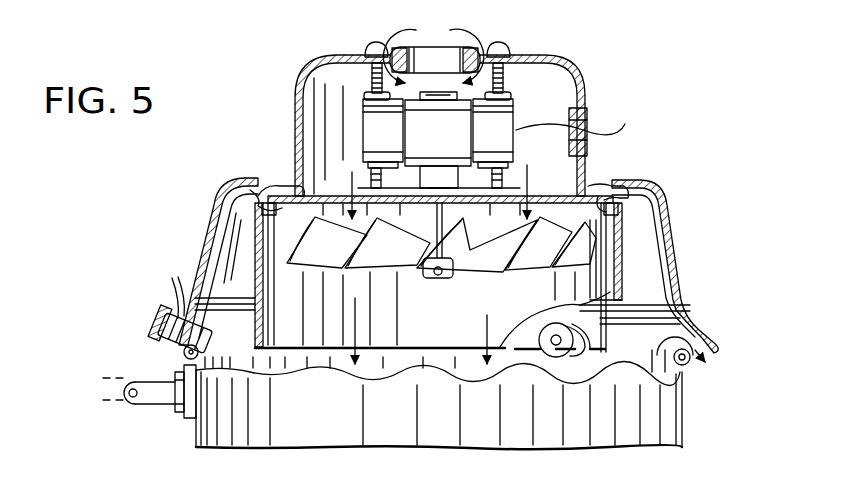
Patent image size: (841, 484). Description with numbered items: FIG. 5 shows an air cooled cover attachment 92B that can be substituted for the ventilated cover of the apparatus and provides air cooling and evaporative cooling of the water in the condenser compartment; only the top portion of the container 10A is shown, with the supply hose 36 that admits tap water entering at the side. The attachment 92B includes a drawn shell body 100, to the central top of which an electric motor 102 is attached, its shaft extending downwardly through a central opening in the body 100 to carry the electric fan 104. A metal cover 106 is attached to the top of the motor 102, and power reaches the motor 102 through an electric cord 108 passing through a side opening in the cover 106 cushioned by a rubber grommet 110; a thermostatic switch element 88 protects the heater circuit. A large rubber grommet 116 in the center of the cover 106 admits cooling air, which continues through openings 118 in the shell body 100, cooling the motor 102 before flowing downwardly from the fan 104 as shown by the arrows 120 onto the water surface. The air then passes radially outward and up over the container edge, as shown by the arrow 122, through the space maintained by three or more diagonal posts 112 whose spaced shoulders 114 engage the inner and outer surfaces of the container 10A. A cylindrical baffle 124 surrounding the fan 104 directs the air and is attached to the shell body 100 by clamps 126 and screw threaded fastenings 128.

The thermostatic switch element 88 is at (437, 50).
The large rubber grommet 116 is at (473, 53).
The metal cover 106 is at (317, 75).
The electric motor 102 is at (372, 127).
The rubber grommet 110 is at (583, 112).
The electric cord 108 is at (612, 124).
The screw threaded fastenings 128 is at (283, 190).
The openings 118 is at (343, 183).
The cover attachment 92B is at (668, 183).
The clamps 126 is at (222, 200).
The shell body 100 is at (678, 240).
The cylindrical baffle 124 is at (622, 248).
The electric fan 104 is at (386, 256).
The arrows 120 is at (356, 316).
The spaced shoulders 114 is at (178, 295).
The posts 112 is at (158, 323).
The arrow 122 is at (688, 334).
The supply hose 36 is at (150, 398).
The container 10A is at (690, 378).